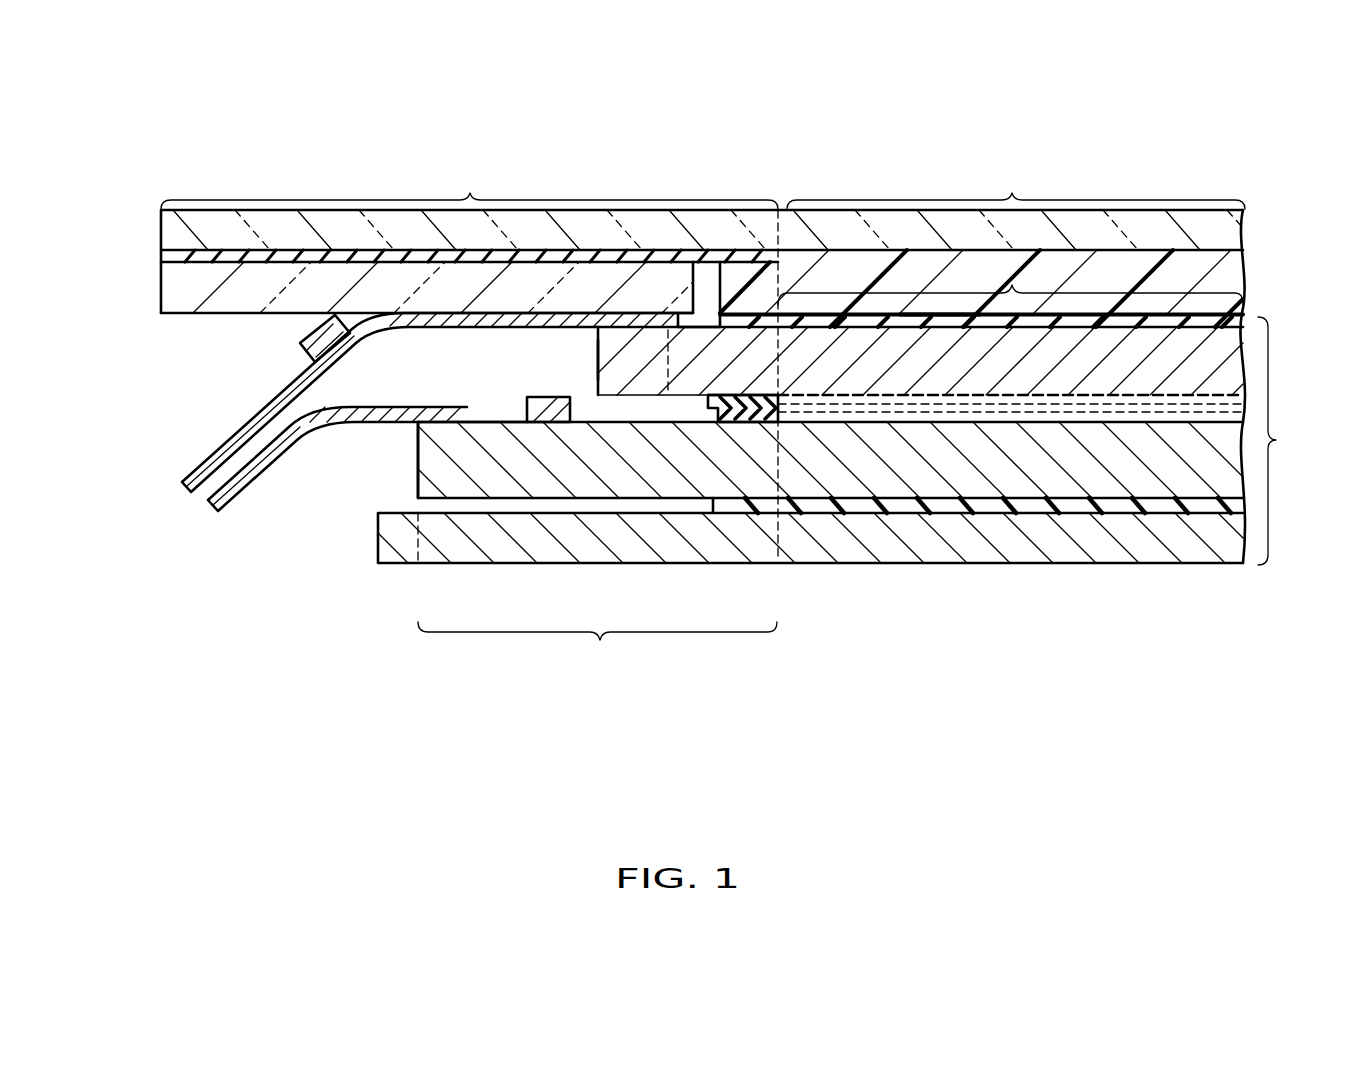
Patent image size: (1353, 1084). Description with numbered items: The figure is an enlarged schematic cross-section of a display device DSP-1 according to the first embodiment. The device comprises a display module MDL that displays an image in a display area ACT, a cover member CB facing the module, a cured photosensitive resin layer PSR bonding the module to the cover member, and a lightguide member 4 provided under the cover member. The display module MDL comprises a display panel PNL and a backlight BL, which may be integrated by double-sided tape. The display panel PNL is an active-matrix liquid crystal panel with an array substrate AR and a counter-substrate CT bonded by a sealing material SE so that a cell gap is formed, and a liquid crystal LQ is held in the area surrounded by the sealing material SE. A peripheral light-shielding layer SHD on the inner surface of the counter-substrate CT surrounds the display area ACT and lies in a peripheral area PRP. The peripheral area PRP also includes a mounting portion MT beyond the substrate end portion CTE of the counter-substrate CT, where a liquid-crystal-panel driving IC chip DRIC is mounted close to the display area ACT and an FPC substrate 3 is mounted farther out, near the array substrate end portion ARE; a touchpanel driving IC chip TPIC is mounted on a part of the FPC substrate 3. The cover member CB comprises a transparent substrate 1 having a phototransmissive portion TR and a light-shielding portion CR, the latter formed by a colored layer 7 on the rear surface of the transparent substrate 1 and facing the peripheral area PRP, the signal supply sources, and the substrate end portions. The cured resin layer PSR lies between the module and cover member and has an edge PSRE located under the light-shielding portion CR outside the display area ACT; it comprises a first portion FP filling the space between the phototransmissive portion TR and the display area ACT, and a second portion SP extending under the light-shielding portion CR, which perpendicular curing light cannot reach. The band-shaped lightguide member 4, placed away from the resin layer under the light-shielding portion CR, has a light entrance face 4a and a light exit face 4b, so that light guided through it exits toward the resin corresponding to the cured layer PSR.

The transparent substrate 1 is at (1233, 234).
The FPC substrate 3 is at (277, 413).
The lightguide member 4 is at (185, 305).
The light entrance face 4a is at (158, 289).
The light exit face 4b is at (700, 285).
The colored layer 7 is at (223, 255).
The cover member CB is at (161, 232).
The touchpanel driving IC chip TPIC is at (303, 343).
The mounting portion MT is at (519, 399).
The liquid-crystal-panel driving IC chip DRIC is at (547, 397).
The array substrate end portion ARE is at (418, 456).
The display panel PNL is at (415, 503).
The light-shielding portion CR is at (469, 182).
The second portion SP is at (748, 297).
The first portion FP is at (925, 267).
The phototransmissive portion TR is at (1016, 182).
The display area ACT is at (1010, 288).
The display module MDL is at (819, 464).
The substrate end portion CTE is at (596, 358).
The edge PSRE is at (678, 316).
The peripheral light-shielding layer SHD is at (728, 424).
The sealing material SE is at (752, 412).
The array substrate AR is at (802, 470).
The liquid crystal LQ is at (843, 410).
The counter-substrate CT is at (888, 377).
The cured photosensitive resin layer PSR is at (937, 305).
The backlight BL is at (1213, 557).
The peripheral area PRP is at (597, 647).
The display device DSP-1 is at (659, 686).